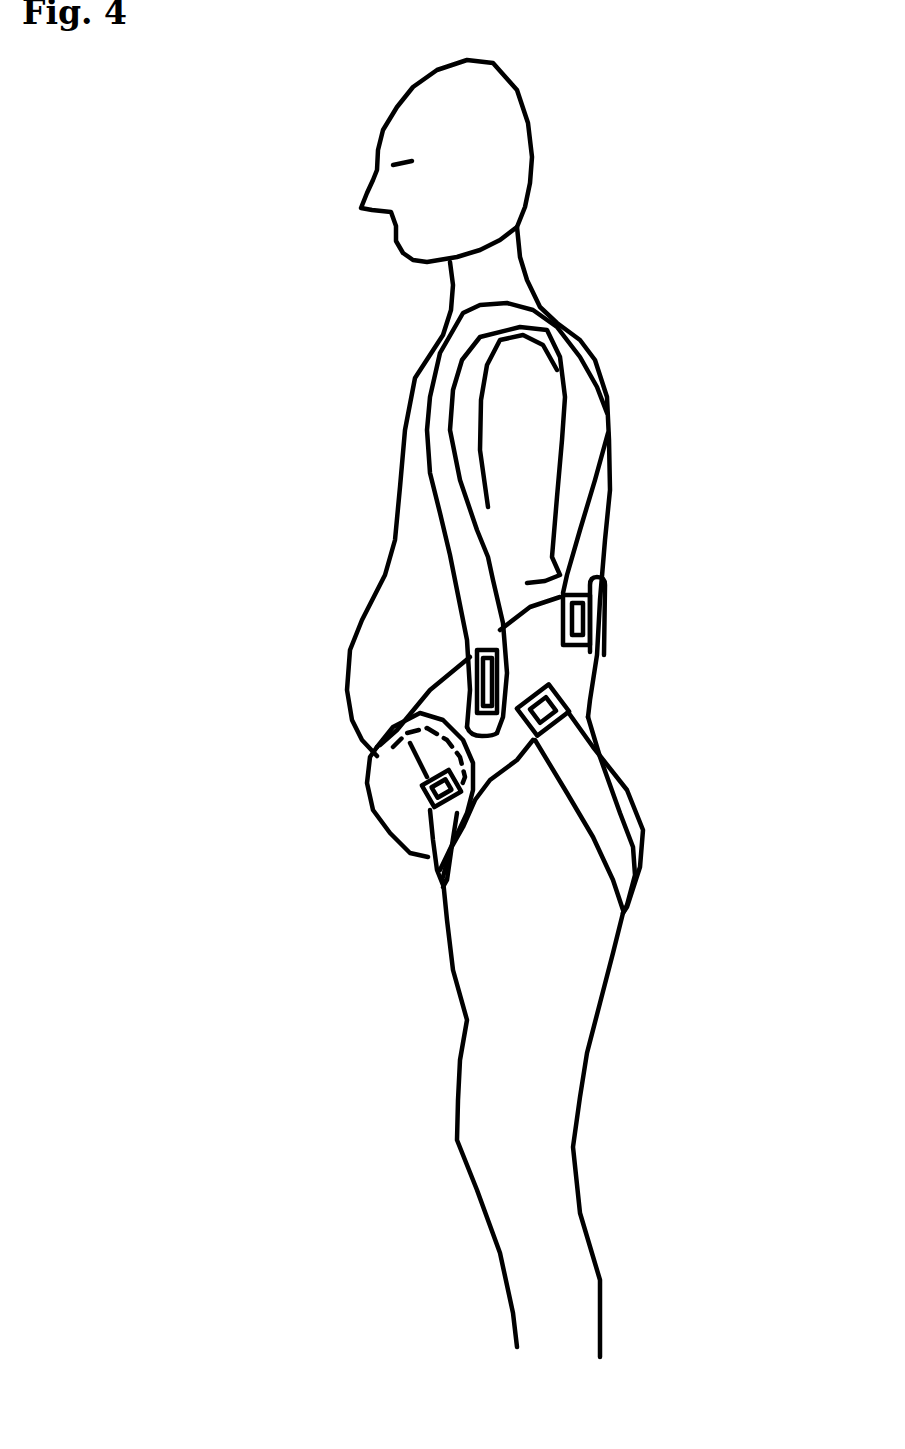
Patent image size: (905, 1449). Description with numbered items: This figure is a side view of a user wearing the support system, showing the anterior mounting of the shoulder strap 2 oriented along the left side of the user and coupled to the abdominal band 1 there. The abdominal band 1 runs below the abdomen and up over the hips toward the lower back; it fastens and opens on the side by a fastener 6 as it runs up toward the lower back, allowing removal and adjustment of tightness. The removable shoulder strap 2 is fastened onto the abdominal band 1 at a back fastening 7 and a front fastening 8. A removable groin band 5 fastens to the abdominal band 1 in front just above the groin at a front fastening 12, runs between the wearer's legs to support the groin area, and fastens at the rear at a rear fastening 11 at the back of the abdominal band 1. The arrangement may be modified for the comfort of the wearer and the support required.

The abdominal band 1 is at (570, 675).
The shoulder strap 2 is at (450, 490).
The groin band 5 is at (597, 815).
The fastener 6 is at (420, 753).
The back fastening 7 is at (607, 612).
The front fastening 8 is at (470, 677).
The rear groin band fastening 11 is at (550, 720).
The front groin band fastening 12 is at (426, 800).